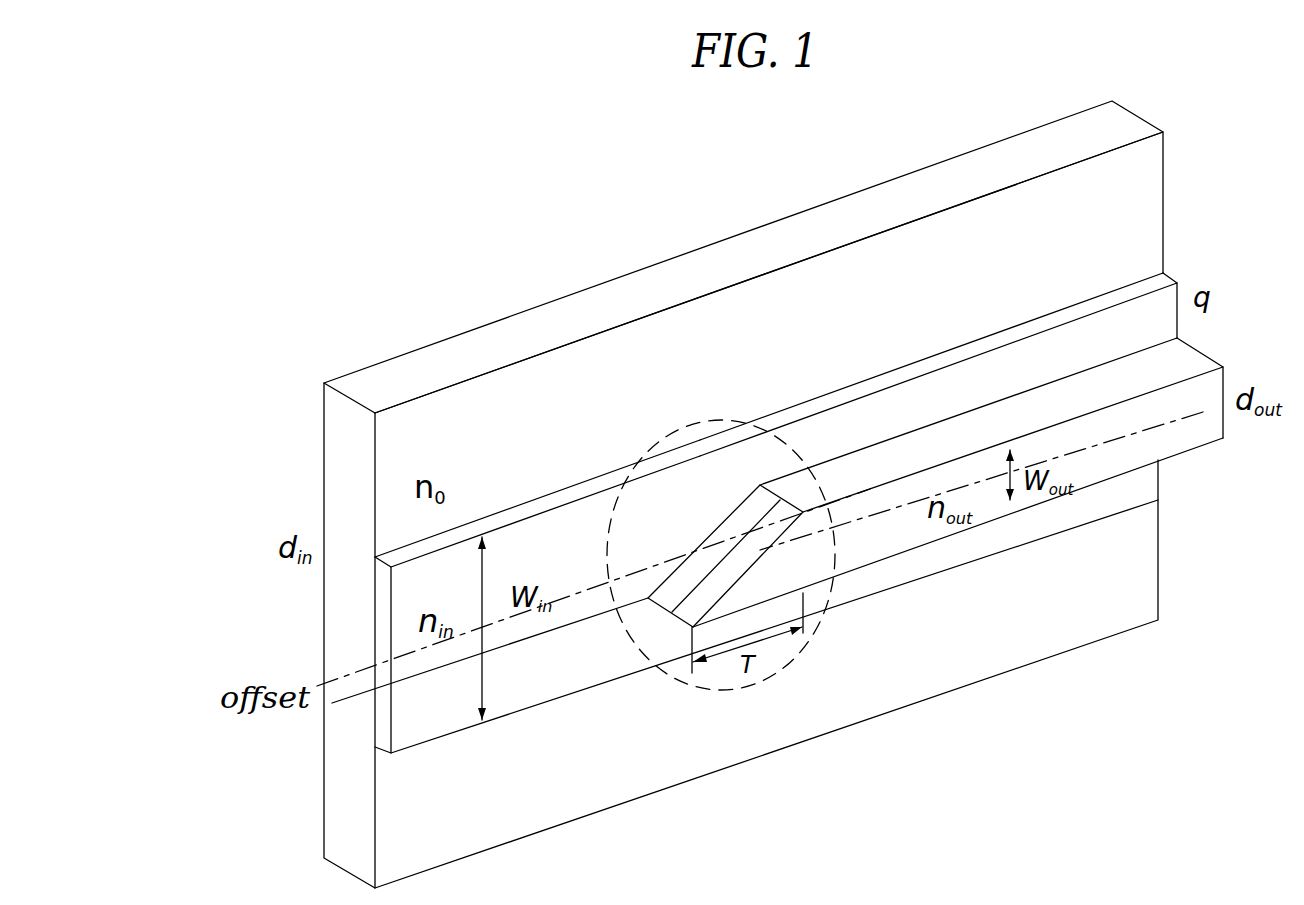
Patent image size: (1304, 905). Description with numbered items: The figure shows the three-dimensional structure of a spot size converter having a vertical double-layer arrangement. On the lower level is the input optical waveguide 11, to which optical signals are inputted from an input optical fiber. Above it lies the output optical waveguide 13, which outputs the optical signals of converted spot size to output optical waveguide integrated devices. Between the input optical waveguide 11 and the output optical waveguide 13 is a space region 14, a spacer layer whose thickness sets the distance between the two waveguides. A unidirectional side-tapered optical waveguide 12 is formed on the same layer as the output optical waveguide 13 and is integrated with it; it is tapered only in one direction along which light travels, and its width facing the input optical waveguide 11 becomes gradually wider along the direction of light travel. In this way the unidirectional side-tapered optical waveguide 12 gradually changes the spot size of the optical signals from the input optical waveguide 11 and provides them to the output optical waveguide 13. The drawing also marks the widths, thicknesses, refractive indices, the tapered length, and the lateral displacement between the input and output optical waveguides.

The input optical waveguide 11 is at (415, 717).
The unidirectional side-tapered optical waveguide 12 is at (768, 582).
The output optical waveguide 13 is at (1170, 442).
The space region 14 is at (1177, 353).